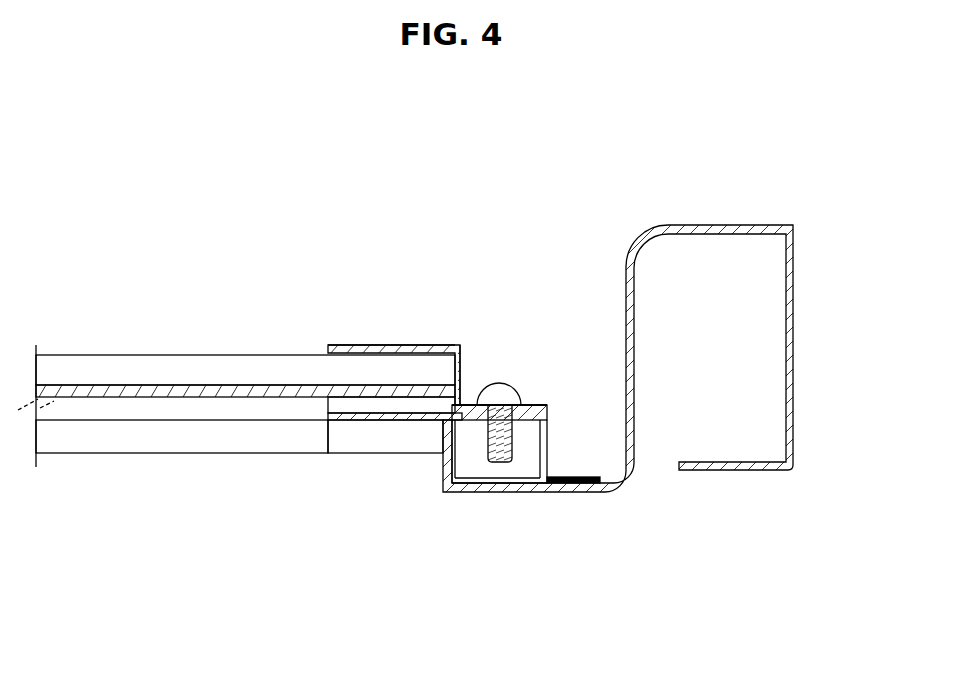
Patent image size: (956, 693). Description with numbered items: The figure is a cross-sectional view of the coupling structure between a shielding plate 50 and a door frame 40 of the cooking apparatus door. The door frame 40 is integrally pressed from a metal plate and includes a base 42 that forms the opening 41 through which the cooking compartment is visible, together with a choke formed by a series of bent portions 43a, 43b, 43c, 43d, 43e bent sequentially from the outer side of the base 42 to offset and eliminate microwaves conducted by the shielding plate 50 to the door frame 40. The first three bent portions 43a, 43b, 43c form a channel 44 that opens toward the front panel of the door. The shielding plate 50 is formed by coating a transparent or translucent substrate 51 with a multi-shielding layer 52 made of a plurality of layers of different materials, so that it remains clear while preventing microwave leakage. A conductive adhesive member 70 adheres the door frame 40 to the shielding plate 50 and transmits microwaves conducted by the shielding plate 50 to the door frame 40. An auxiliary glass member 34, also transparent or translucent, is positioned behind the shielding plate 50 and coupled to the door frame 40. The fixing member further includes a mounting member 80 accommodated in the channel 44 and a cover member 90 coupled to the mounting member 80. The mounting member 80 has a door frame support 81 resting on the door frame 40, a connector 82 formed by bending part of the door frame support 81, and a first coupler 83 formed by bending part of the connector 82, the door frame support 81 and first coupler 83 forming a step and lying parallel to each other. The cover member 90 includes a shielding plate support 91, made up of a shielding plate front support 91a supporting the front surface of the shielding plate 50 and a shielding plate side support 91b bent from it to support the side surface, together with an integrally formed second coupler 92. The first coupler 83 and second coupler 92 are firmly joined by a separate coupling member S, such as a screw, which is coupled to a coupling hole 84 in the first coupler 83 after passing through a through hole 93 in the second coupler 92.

The auxiliary glass member 34 is at (158, 453).
The door frame 40 is at (587, 363).
The opening 41 is at (318, 421).
The base 42 is at (383, 421).
The bent portion 43a is at (443, 468).
The bent portion 43b is at (502, 494).
The bent portion 43c is at (635, 357).
The bent portion 43d is at (725, 234).
The bent portion 43e is at (794, 318).
The channel 44 is at (596, 450).
The shielding plate 50 is at (245, 330).
The substrate 51 is at (159, 357).
The multi-shielding layer 52 is at (162, 305).
The conductive adhesive member 70 is at (333, 405).
The mounting member 80 is at (555, 485).
The door frame support 81 is at (575, 470).
The connector 82 is at (535, 452).
The first coupler 83 is at (470, 421).
The coupling hole 84 is at (487, 421).
The cover member 90 is at (406, 320).
The shielding plate support 91 is at (406, 320).
The shielding plate front support 91a is at (408, 343).
The shielding plate side support 91b is at (468, 344).
The second coupler 92 is at (541, 401).
The through hole 93 is at (510, 404).
The coupling member S is at (500, 390).